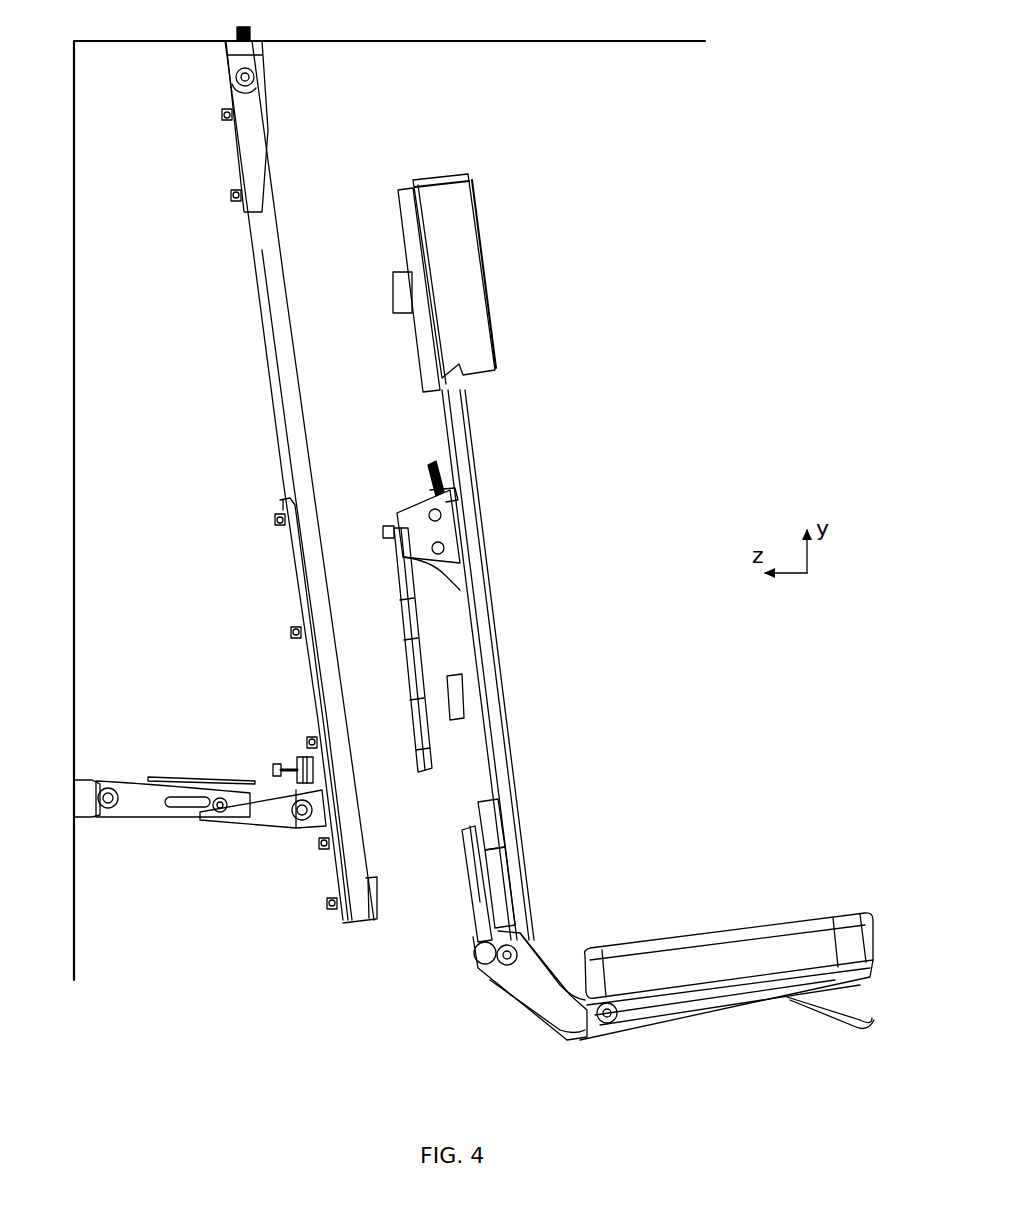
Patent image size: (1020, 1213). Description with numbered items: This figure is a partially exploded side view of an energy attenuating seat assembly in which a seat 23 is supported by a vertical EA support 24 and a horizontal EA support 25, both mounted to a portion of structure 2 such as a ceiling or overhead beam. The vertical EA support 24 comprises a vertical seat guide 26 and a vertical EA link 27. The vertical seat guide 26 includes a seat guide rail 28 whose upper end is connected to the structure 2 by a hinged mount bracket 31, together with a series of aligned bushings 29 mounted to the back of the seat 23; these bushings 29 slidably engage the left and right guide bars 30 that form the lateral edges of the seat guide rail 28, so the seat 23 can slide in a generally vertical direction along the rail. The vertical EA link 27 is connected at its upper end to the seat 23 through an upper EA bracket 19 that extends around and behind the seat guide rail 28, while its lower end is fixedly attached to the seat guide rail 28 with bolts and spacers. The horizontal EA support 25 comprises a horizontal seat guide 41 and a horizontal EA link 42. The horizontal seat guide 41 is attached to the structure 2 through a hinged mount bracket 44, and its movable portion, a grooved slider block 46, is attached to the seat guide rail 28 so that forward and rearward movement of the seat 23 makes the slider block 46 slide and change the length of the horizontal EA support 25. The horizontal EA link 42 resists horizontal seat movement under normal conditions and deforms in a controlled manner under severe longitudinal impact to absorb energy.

The structure 2 is at (628, 40).
The upper EA bracket 19 is at (433, 525).
The seat 23 is at (662, 864).
The vertical EA support 24 is at (190, 383).
The horizontal EA support 25 is at (165, 745).
The vertical seat guide 26 is at (383, 362).
The vertical EA link 27 is at (407, 627).
The seat guide rail 28 is at (278, 422).
The bushings 29 is at (406, 314).
The guide bars 30 is at (275, 238).
The hinged mount bracket 31 is at (258, 69).
The horizontal seat guide 41 is at (213, 775).
The horizontal EA link 42 is at (172, 820).
The hinged mount bracket 44 is at (96, 822).
The slider block 46 is at (258, 812).